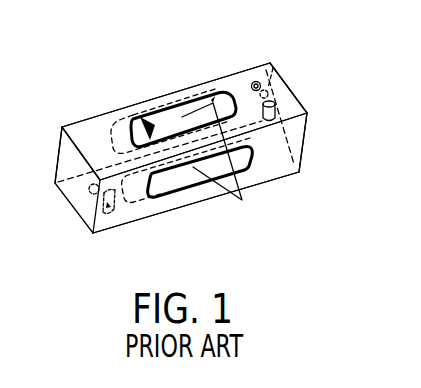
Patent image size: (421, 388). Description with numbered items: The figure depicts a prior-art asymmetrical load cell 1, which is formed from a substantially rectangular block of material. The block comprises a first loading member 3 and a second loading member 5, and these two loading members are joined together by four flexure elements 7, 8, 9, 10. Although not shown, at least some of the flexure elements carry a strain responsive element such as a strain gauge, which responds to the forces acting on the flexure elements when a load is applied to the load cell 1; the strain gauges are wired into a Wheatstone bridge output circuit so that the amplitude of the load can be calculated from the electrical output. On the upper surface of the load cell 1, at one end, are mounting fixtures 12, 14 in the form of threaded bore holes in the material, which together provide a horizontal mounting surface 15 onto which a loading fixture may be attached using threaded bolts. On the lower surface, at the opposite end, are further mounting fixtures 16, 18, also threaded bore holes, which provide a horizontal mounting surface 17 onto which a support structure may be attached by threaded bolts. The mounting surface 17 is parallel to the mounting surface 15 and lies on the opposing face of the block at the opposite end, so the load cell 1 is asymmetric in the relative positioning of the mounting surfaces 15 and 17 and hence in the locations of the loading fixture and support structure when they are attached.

The load cell 1 is at (100, 234).
The first loading member 3 is at (87, 128).
The second loading member 5 is at (302, 147).
The flexure element 7 is at (207, 80).
The flexure element 8 is at (257, 123).
The flexure element 9 is at (196, 190).
The flexure element 10 is at (133, 110).
The mounting fixture 12 is at (253, 76).
The mounting fixture 14 is at (274, 107).
The mounting surface 15 is at (280, 71).
The mounting fixture 16 is at (64, 200).
The mounting surface 17 is at (78, 233).
The mounting fixture 18 is at (122, 222).